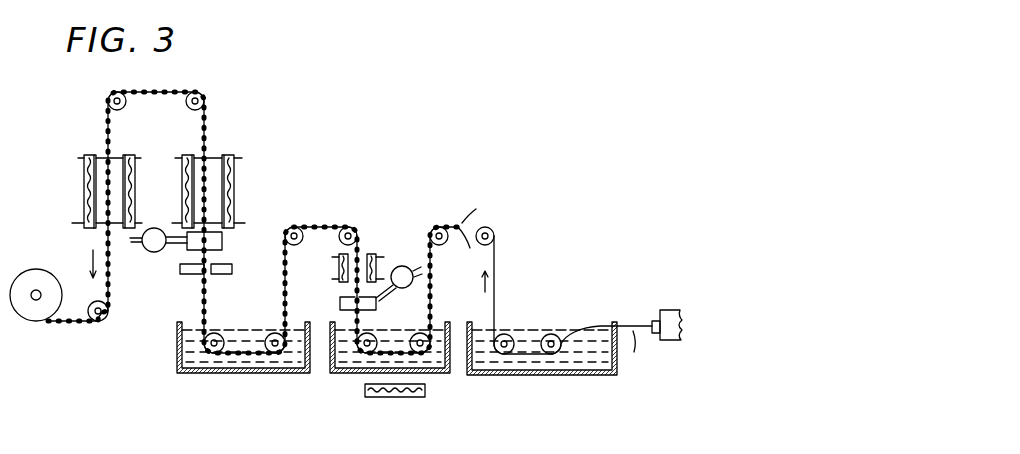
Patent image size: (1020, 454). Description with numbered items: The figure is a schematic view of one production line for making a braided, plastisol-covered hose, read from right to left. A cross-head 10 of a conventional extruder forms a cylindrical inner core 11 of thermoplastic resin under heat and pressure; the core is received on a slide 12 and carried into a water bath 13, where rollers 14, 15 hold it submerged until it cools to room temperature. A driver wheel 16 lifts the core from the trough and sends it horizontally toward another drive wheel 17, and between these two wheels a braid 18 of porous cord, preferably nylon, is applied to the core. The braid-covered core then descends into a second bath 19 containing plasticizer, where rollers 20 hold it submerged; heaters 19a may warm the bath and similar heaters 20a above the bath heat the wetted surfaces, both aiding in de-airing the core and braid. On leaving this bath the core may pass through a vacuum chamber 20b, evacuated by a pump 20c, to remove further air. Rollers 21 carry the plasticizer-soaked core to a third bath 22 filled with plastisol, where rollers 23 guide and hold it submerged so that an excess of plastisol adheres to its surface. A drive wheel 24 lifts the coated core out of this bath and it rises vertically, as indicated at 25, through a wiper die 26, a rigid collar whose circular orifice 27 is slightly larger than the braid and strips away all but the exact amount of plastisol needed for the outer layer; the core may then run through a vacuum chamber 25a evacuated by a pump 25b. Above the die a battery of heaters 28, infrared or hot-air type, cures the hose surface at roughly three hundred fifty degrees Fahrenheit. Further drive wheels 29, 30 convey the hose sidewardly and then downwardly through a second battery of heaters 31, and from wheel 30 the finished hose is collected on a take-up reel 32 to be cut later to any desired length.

The cross-head 10 is at (662, 311).
The inner core 11 is at (575, 330).
The slide 12 is at (643, 353).
The water bath 13 is at (542, 367).
The roller 14 is at (553, 333).
The roller 15 is at (507, 333).
The driver wheel 16 is at (494, 236).
The drive wheel 17 is at (437, 226).
The braid 18 is at (465, 216).
The second bath 19 is at (350, 367).
The heaters 19a is at (395, 397).
The rollers 20 is at (419, 333).
The heaters 20a is at (339, 272).
The vacuum chamber 20b is at (340, 304).
The pump 20c is at (402, 267).
The rollers 21 is at (350, 226).
The third bath 22 is at (240, 367).
The rollers 23 is at (272, 333).
The drive wheel 24 is at (204, 97).
The vertical rise of coated core 25 is at (204, 303).
The vacuum chamber 25a is at (222, 241).
The pump 25b is at (143, 247).
The wiper die 26 is at (181, 268).
The circular orifice 27 is at (204, 274).
The battery of heaters 28 is at (233, 174).
The drive wheel 29 is at (108, 101).
The drive wheel 30 is at (96, 322).
The second battery of heaters 31 is at (84, 187).
The take-up reel 32 is at (38, 271).